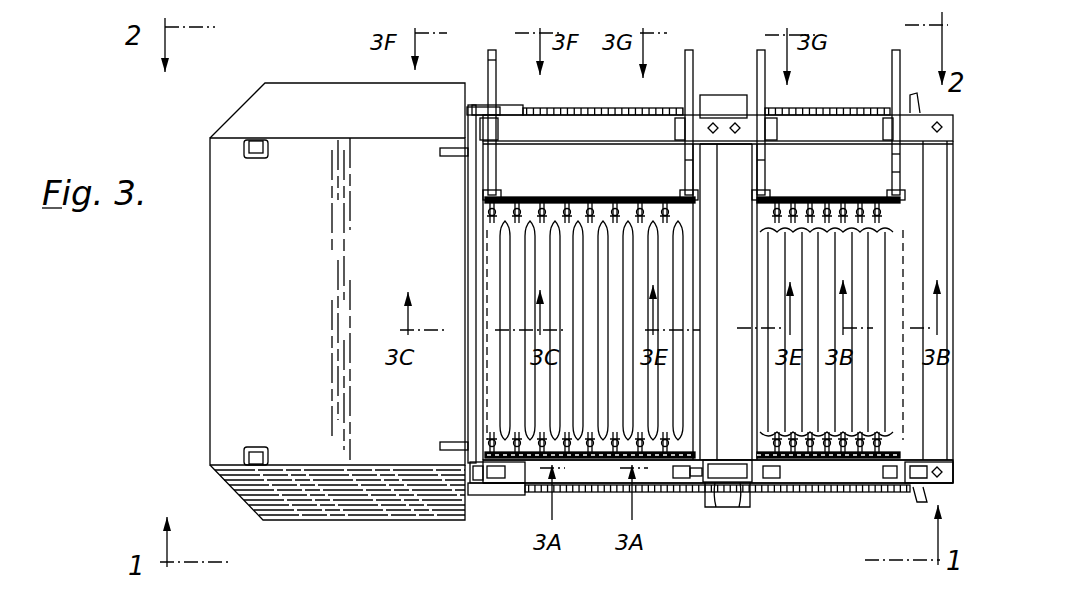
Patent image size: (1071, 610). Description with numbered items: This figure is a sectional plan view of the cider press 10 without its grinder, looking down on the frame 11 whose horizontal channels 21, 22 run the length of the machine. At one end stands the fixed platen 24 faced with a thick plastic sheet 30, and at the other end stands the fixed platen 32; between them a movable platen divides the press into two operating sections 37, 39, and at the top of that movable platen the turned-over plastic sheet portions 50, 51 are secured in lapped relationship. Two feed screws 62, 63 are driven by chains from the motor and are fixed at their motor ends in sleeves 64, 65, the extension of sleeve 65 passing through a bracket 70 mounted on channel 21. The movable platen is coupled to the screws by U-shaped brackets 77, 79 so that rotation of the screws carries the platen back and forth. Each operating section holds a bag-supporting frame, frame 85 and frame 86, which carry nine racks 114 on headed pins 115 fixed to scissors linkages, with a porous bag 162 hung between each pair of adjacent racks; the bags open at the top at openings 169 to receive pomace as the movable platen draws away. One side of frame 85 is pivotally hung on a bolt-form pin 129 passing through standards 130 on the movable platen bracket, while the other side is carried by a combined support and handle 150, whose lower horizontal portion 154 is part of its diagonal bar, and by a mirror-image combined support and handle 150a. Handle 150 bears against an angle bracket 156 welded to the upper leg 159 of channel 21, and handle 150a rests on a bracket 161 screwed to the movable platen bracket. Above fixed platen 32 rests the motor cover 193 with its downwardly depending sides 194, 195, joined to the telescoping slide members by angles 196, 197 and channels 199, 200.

The cider press 10 is at (185, 290).
The frame 11 is at (588, 492).
The horizontal channel 21 is at (832, 120).
The horizontal channel 22 is at (828, 478).
The fixed platen 24 is at (892, 154).
The thick plastic sheet 30 is at (892, 172).
The fixed platen 32 is at (470, 178).
The operating section 37 is at (600, 185).
The operating section 39 is at (818, 185).
The turned-over sheet portion 50 is at (745, 283).
The turned-over sheet portion 51 is at (708, 296).
The feed screw 62 is at (600, 492).
The feed screw 63 is at (578, 108).
The sleeve 64 is at (498, 492).
The sleeve 65 is at (506, 105).
The bracket 70 is at (685, 157).
The U-shaped bracket 77 is at (718, 482).
The U-shaped bracket 79 is at (712, 110).
The frame 85 is at (548, 197).
The frame 86 is at (790, 197).
The racks 114 is at (524, 200).
The headed pin 115 is at (583, 195).
The pin 129 is at (732, 507).
The standards 130 is at (712, 482).
The combined support and handle 150 is at (490, 50).
The combined support and handle 150a is at (685, 78).
The lower horizontal portion 154 is at (488, 68).
The angle bracket 156 is at (470, 112).
The upper leg 159 is at (555, 135).
The bracket 161 is at (728, 110).
The porous bag 162 is at (603, 142).
The bag opening 169 is at (580, 273).
The motor cover 193 is at (275, 313).
The motor cover side 194 is at (310, 507).
The motor cover side 195 is at (305, 83).
The angle 196 is at (440, 445).
The angle 197 is at (460, 152).
The channel 199 is at (262, 446).
The channel 200 is at (258, 158).